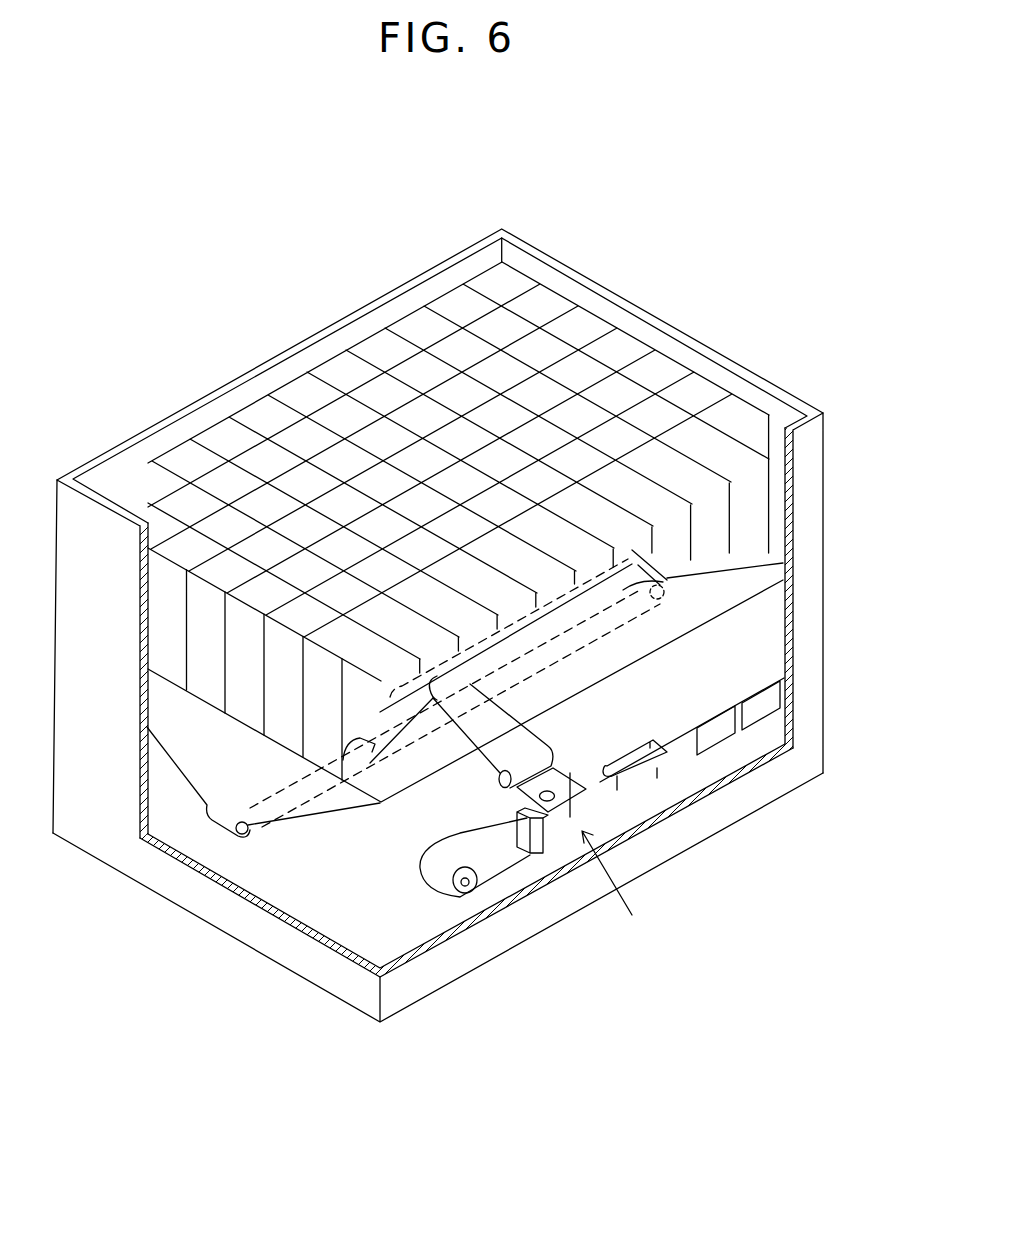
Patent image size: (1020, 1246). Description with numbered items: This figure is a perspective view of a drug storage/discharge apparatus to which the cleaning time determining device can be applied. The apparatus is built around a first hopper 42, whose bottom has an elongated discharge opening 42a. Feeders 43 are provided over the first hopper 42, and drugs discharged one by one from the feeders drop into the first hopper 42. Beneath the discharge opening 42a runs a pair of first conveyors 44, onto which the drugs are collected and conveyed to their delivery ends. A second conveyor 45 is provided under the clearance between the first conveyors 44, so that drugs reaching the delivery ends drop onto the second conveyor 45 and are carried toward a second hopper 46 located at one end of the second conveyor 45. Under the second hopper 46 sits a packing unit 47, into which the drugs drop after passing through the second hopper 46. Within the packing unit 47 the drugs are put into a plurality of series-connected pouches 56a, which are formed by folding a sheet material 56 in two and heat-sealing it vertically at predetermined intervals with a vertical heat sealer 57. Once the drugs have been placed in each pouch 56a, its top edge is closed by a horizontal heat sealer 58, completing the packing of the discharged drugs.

The first hopper 42 is at (213, 758).
The elongated discharge opening 42a is at (345, 757).
The feeders 43 is at (245, 460).
The first conveyors 44 is at (667, 578).
The second conveyor 45 is at (500, 757).
The second hopper 46 is at (580, 790).
The packing unit 47 is at (620, 889).
The sheet material 56 is at (467, 857).
The pouches 56a is at (767, 757).
The vertical heat sealer 57 is at (543, 853).
The horizontal heat sealer 58 is at (642, 767).